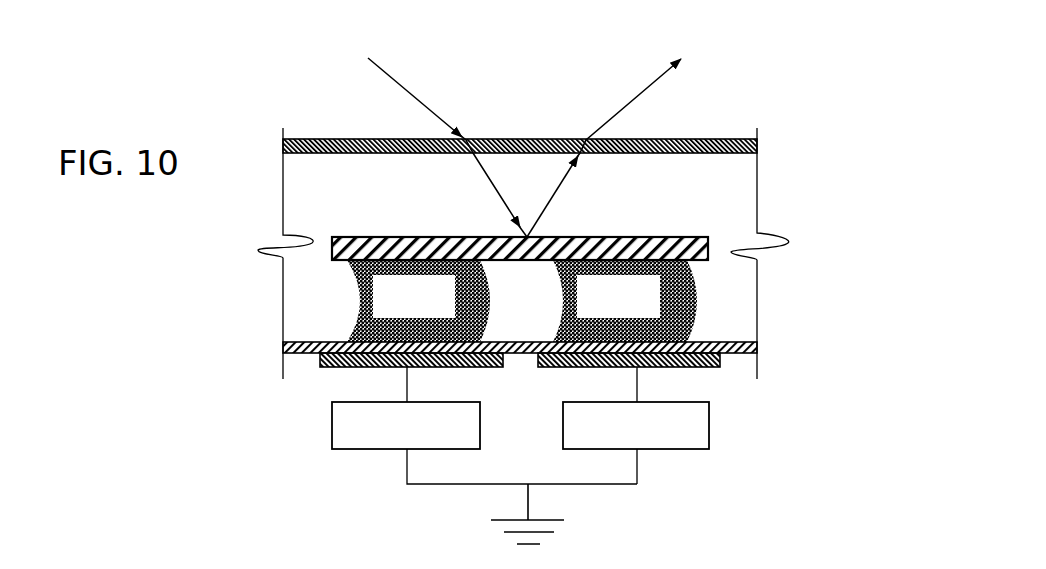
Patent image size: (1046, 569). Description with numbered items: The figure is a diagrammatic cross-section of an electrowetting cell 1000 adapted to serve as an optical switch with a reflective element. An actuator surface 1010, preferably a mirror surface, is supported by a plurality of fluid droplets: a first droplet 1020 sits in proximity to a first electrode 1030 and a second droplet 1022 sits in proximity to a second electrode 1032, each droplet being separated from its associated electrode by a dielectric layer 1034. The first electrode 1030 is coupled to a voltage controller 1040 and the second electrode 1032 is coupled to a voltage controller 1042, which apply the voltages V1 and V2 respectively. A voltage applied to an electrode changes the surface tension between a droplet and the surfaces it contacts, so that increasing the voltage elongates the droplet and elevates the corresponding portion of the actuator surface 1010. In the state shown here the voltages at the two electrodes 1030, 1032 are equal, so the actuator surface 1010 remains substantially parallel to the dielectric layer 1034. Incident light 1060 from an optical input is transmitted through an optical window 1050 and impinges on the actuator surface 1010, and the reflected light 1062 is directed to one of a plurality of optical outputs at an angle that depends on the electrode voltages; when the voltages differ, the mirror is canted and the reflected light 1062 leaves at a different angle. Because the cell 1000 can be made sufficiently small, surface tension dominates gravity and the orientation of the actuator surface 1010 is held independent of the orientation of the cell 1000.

The electrowetting cell 1000 is at (782, 102).
The actuator surface 1010 is at (648, 237).
The first droplet 1020 is at (440, 309).
The second droplet 1022 is at (644, 309).
The first electrode 1030 is at (335, 368).
The second electrode 1032 is at (720, 367).
The dielectric layer 1034 is at (722, 342).
The voltage controller 1040 is at (332, 441).
The voltage controller 1042 is at (710, 425).
The optical window 1050 is at (320, 138).
The incident light 1060 is at (393, 78).
The reflected light 1062 is at (612, 116).